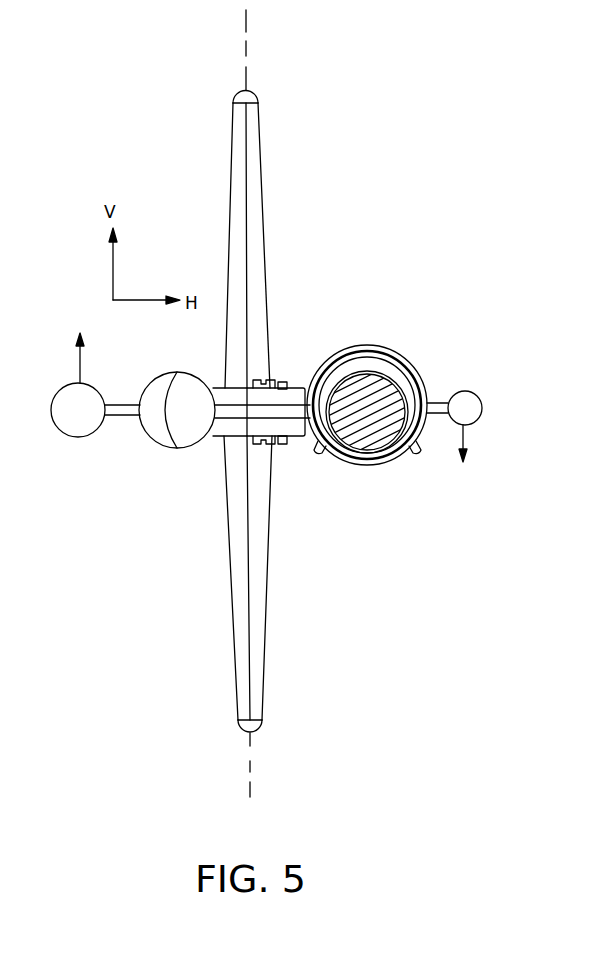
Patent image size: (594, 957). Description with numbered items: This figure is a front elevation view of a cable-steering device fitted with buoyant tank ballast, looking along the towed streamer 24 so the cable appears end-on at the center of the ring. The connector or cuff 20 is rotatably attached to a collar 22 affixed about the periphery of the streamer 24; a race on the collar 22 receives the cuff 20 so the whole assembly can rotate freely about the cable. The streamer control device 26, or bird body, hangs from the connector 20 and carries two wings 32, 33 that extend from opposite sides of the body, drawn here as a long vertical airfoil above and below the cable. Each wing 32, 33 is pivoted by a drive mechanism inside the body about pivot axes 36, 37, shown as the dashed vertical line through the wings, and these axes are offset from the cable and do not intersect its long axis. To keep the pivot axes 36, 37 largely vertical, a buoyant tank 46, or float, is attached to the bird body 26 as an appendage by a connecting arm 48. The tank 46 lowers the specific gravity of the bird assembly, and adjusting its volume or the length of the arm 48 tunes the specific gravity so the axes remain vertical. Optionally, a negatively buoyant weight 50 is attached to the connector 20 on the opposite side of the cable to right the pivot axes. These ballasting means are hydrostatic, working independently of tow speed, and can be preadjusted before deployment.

The connector or cuff 20 is at (345, 352).
The collar 22 is at (365, 466).
The streamer 24 is at (399, 441).
The streamer control device 26 is at (185, 449).
The wing 32 is at (260, 235).
The wing 33 is at (263, 601).
The pivot axis 36 is at (246, 20).
The pivot axis 37 is at (250, 787).
The buoyant tank 46 is at (78, 394).
The connecting arm 48 is at (122, 416).
The weight 50 is at (480, 397).